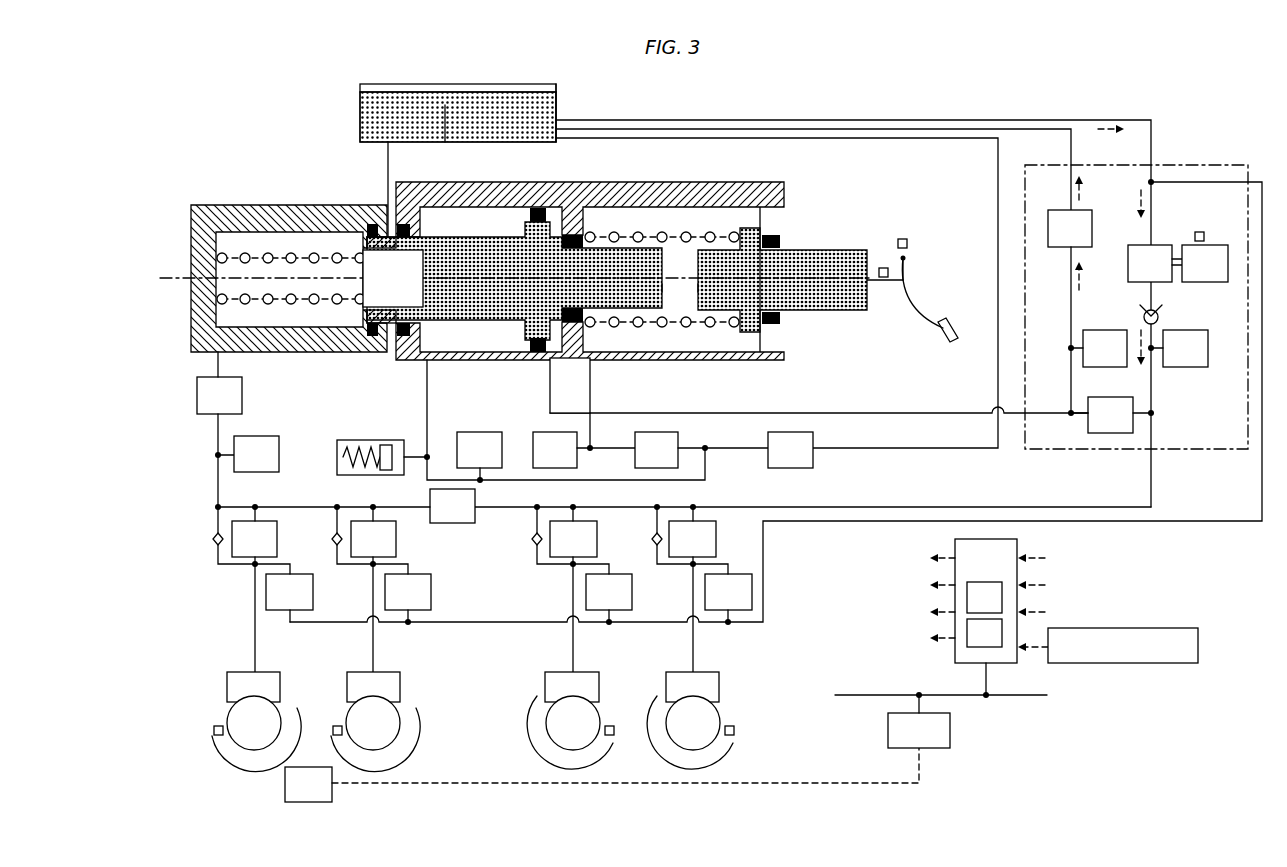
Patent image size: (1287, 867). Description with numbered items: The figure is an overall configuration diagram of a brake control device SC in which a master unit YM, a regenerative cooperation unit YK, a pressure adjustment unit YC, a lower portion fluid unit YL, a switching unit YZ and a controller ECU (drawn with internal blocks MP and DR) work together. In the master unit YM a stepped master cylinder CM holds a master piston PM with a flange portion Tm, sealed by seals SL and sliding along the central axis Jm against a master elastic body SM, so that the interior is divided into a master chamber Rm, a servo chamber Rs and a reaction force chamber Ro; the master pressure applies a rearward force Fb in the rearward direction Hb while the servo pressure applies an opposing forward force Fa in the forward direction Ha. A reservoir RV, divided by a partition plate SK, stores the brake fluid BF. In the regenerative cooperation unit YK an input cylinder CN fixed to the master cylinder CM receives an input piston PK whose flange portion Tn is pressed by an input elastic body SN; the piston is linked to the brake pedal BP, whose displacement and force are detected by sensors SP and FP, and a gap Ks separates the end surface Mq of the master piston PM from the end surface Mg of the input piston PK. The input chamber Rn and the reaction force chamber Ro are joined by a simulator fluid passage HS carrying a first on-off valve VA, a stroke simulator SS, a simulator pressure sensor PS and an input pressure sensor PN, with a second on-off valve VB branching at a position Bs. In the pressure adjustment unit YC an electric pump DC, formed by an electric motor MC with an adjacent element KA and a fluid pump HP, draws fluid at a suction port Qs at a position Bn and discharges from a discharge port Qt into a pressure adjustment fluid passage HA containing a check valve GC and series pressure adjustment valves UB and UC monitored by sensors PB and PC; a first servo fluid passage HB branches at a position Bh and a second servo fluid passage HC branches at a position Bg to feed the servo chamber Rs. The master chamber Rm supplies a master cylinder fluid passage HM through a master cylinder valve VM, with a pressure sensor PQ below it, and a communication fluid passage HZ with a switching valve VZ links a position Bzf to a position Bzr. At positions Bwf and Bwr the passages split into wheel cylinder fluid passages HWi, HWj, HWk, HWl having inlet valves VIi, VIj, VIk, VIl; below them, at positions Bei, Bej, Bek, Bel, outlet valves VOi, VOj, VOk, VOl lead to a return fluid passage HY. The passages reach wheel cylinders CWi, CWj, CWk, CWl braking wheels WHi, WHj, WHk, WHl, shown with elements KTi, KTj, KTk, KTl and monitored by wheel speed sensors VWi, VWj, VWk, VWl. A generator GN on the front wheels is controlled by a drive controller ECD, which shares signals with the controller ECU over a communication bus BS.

The reservoir RV is at (401, 84).
The partition plate SK is at (448, 106).
The brake fluid BF is at (558, 104).
The brake control device SC is at (242, 150).
The master unit YM is at (293, 165).
The master cylinder CM is at (288, 204).
The master cylinder chamber Rm is at (248, 234).
The master elastic body SM is at (268, 302).
The central axis Jm is at (176, 276).
The reaction force hydraulic pressure chamber Ro is at (462, 208).
The seal SL is at (540, 208).
The master cylinder piston PM is at (467, 342).
The flange portion Tm is at (472, 330).
The gap Ks is at (782, 280).
The forward force Fa is at (548, 278).
The rearward force Fb is at (450, 278).
The end surface of master piston Mq is at (668, 253).
The forward direction Ha is at (762, 160).
The rearward direction Hb is at (785, 161).
The regenerative cooperation unit YK is at (812, 197).
The input elastic body SN is at (640, 327).
The input chamber Rn is at (660, 322).
The end surface of input piston Mg is at (700, 300).
The input piston PK is at (727, 323).
The flange portion Tn is at (752, 330).
The input cylinder CN is at (781, 364).
The operation force sensor FP is at (883, 266).
The operation displacement sensor SP is at (906, 240).
The brake operation member BP is at (950, 320).
The pressure adjustment unit YC is at (1184, 165).
The second pressure adjustment valve UC is at (1070, 228).
The pressure adjustment fluid passage HA is at (1071, 294).
The position Bn is at (1148, 182).
The suction port Qs is at (1148, 240).
The discharge port Qt is at (1148, 292).
The fluid pump HP is at (1155, 263).
The electric motor MC is at (1205, 263).
The electric pump DC is at (1177, 236).
The rotation sensor KA is at (1203, 232).
The check valve GC is at (1157, 306).
The second adjustment hydraulic pressure sensor PC is at (1097, 348).
The first adjustment hydraulic pressure sensor PB is at (1178, 348).
The first pressure adjustment valve UB is at (1111, 415).
The position Bg is at (1069, 410).
The position Bh is at (1154, 416).
The second servo fluid passage HC is at (865, 413).
The master cylinder valve VM is at (219, 429).
The master cylinder fluid passage HM is at (218, 432).
The master cylinder hydraulic pressure sensor PQ is at (256, 454).
The stroke simulator SS is at (341, 443).
The simulator fluid passage HS is at (427, 390).
The servo hydraulic pressure chamber Rs is at (570, 403).
The simulator hydraulic pressure sensor PS is at (479, 457).
The input hydraulic pressure sensor PN is at (584, 450).
The first on-off valve VA is at (701, 450).
The position Bs is at (705, 448).
The second on-off valve VB is at (790, 450).
The first servo fluid passage HB is at (865, 507).
The communication fluid passage HZ is at (482, 507).
The switching valve VZ is at (452, 506).
The switching unit YZ is at (462, 540).
The position Bwf is at (254, 507).
The position Bzf is at (371, 507).
The position Bzr is at (575, 507).
The position Bwr is at (695, 507).
The return fluid passage HY is at (1179, 522).
The lower portion fluid unit YL is at (222, 606).
The inlet valve VIi is at (245, 535).
The inlet valve VIj is at (364, 535).
The inlet valve VIk is at (564, 535).
The inlet valve VIl is at (684, 535).
The position Bei is at (252, 568).
The position Bej is at (370, 568).
The position Bek is at (570, 568).
The position Bel is at (690, 568).
The outlet valve VOi is at (284, 593).
The outlet valve VOj is at (402, 594).
The outlet valve VOk is at (602, 594).
The outlet valve VOl is at (722, 594).
The wheel cylinder fluid passage HWi is at (255, 630).
The wheel cylinder fluid passage HWj is at (373, 630).
The wheel cylinder fluid passage HWk is at (573, 630).
The wheel cylinder fluid passage HWl is at (693, 630).
The wheel cylinder CWi is at (253, 687).
The wheel cylinder CWj is at (373, 687).
The wheel cylinder CWk is at (572, 687).
The wheel cylinder CWl is at (692, 687).
The rotating member KTi is at (254, 723).
The rotating member KTj is at (373, 723).
The rotating member KTk is at (573, 723).
The rotating member KTl is at (693, 723).
The wheel WHi is at (212, 760).
The wheel WHj is at (404, 746).
The wheel WHk is at (610, 746).
The wheel WHl is at (730, 746).
The wheel speed sensor VWi is at (217, 724).
The wheel speed sensor VWj is at (336, 724).
The wheel speed sensor VWk is at (610, 724).
The wheel speed sensor VWl is at (730, 724).
The electric motor for driving GN is at (602, 775).
The brake controller ECU is at (1005, 617).
The microprocessor MP is at (984, 597).
The drive circuit DR is at (984, 633).
The communication bus BS is at (941, 685).
The drive controller ECD is at (919, 721).